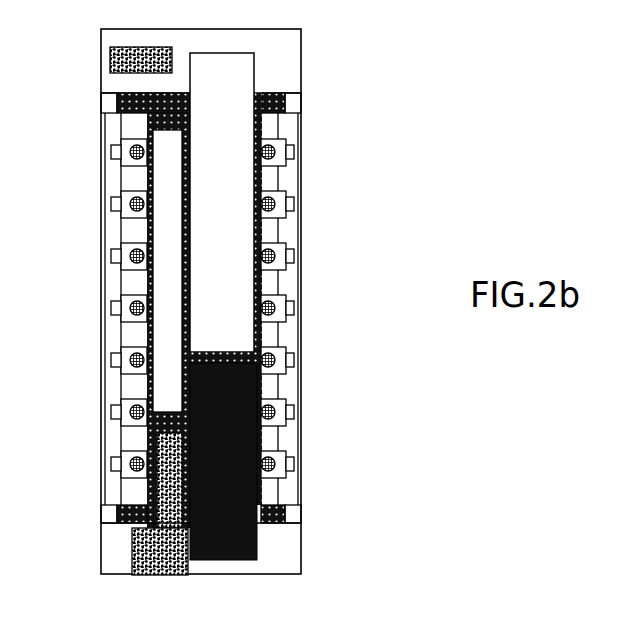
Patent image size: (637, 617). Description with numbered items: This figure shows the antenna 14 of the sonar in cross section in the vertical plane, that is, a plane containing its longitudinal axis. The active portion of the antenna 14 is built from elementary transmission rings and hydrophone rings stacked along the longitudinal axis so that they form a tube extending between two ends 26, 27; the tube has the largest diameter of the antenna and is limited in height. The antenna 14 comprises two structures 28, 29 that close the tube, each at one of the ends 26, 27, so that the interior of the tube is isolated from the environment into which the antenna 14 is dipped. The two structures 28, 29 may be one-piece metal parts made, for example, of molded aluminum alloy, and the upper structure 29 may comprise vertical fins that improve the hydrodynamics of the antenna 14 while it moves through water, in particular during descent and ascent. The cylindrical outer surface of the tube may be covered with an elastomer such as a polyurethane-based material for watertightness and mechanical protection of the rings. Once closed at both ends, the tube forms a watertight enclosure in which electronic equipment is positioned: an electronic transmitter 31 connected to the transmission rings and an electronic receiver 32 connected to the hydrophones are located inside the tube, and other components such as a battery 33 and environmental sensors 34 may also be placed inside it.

The antenna 14 is at (352, 282).
The end of the tube 26 is at (314, 513).
The end of the tube 27 is at (314, 102).
The structure 28 is at (288, 558).
The upper structure 29 is at (285, 50).
The electronic transmitter 31 is at (237, 178).
The electronic receiver 32 is at (237, 385).
The battery 33 is at (163, 230).
The environmental sensors 34 is at (133, 543).